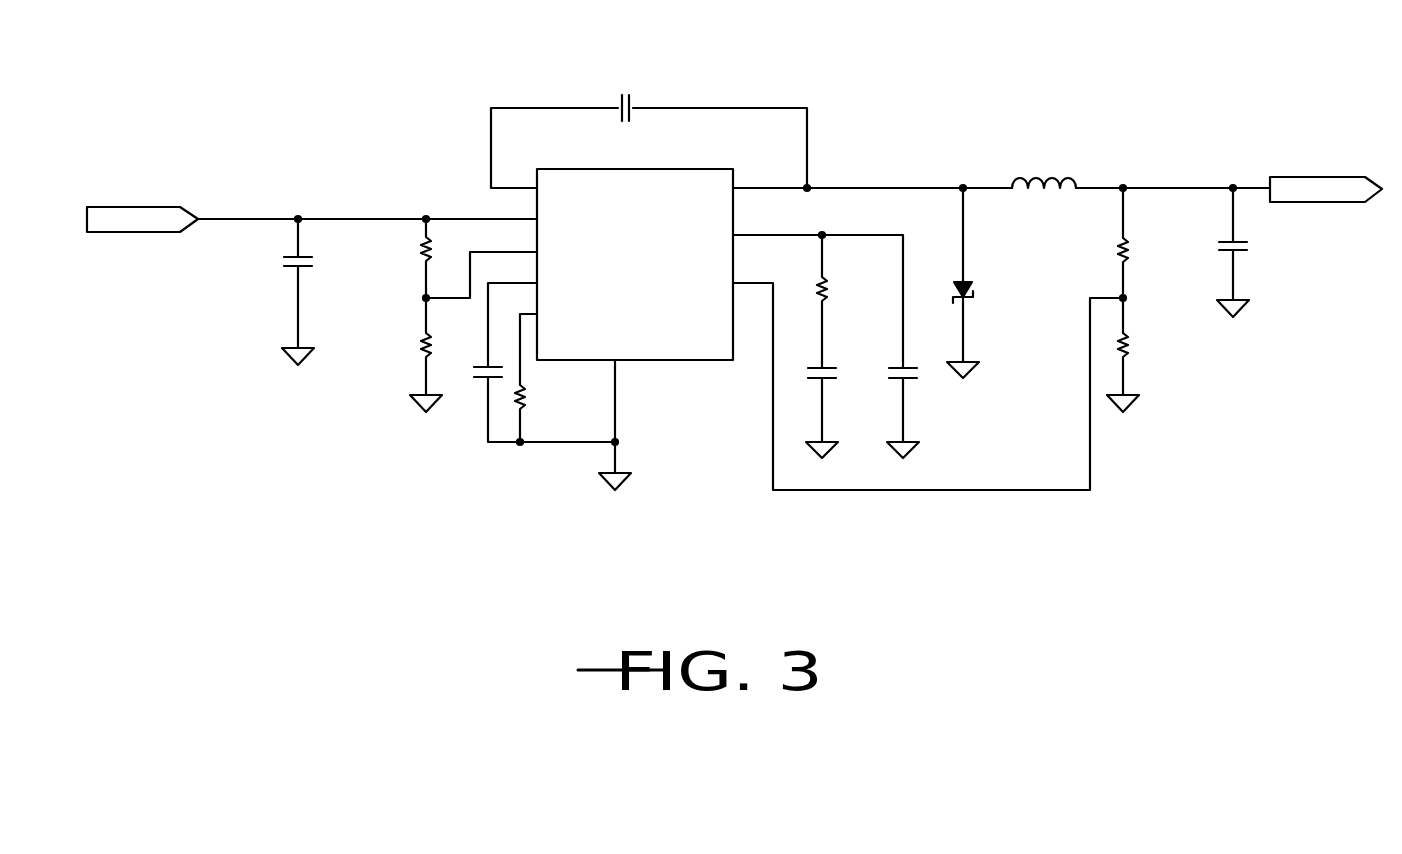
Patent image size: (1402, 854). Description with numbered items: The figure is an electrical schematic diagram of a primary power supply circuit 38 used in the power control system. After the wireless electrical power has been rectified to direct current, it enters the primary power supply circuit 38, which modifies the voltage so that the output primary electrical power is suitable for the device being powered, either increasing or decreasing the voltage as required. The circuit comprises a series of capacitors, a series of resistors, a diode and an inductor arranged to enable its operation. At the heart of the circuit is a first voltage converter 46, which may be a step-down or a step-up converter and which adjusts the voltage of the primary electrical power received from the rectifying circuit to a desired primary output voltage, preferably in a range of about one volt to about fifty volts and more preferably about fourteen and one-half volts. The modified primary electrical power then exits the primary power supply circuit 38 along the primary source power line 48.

The primary power supply circuit 38 is at (1084, 104).
The first voltage converter 46 is at (537, 207).
The primary source power line 48 is at (1256, 190).